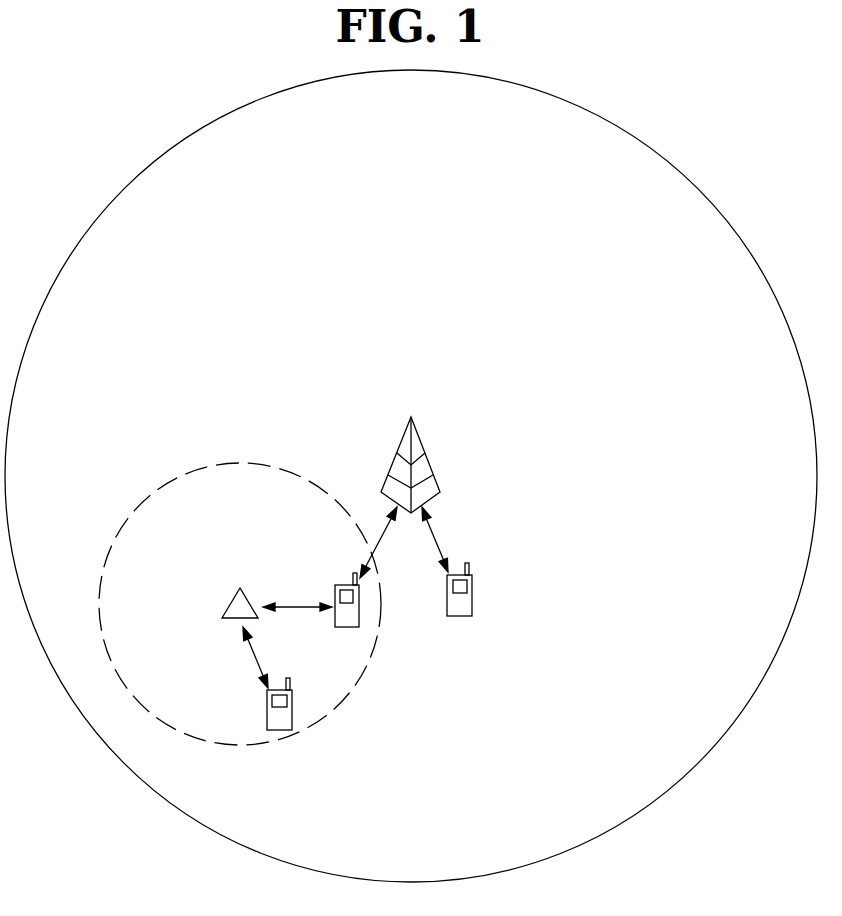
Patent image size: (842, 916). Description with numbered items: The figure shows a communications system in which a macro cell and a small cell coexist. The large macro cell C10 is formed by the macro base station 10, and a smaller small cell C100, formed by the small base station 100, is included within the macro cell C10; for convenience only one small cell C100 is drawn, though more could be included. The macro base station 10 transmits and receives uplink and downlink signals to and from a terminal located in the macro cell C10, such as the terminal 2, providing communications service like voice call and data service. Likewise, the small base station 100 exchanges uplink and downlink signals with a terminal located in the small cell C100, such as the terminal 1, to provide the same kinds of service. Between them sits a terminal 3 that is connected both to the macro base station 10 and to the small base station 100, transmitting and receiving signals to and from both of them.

The macro cell C10 is at (685, 176).
The small cell C100 is at (187, 471).
The macro base station 10 is at (420, 440).
The small base station 100 is at (251, 603).
The terminal 1 is at (283, 730).
The terminal 2 is at (463, 616).
The terminal 3 is at (348, 627).